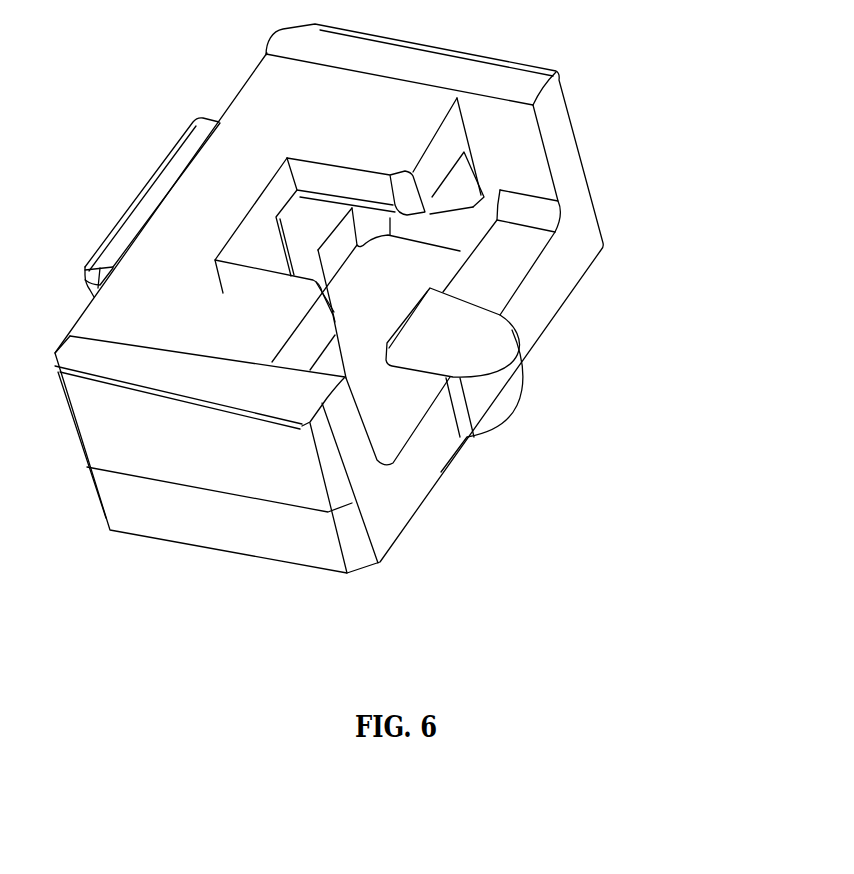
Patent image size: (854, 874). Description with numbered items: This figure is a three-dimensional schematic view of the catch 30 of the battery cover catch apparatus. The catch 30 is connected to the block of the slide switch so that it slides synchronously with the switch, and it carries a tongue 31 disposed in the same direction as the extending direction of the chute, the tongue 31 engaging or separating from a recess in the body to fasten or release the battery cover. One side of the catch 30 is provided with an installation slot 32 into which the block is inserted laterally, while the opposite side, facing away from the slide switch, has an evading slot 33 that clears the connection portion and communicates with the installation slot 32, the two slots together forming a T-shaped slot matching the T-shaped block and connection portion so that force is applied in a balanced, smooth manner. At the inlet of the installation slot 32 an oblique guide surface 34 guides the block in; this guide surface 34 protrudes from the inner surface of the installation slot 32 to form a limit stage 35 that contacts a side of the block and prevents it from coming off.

The catch 30 is at (622, 297).
The tongue 31 is at (138, 217).
The installation slot 32 is at (460, 202).
The evading slot 33 is at (315, 183).
The guide surface 34 is at (463, 340).
The limit stage 35 is at (450, 445).